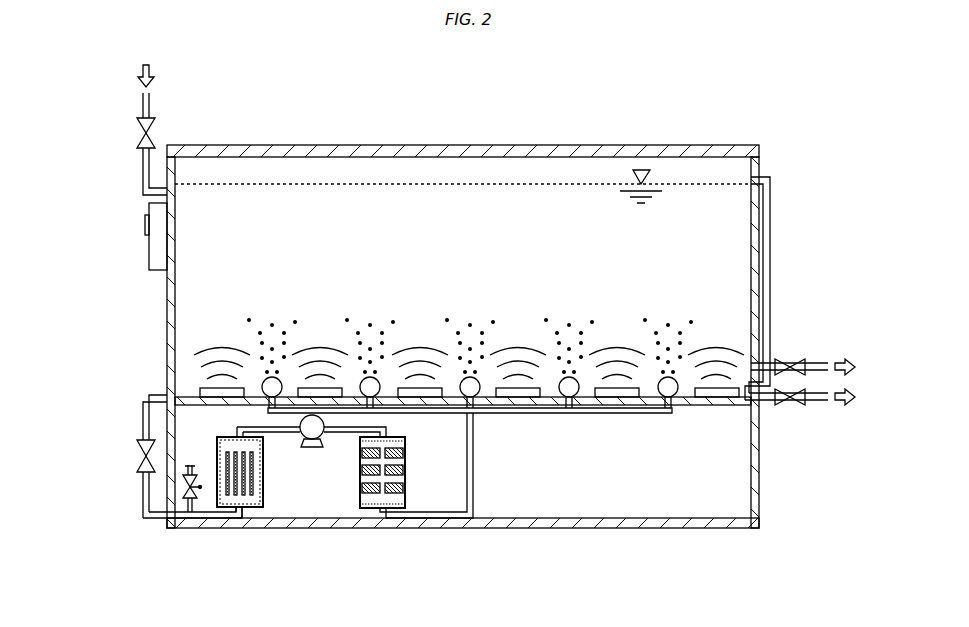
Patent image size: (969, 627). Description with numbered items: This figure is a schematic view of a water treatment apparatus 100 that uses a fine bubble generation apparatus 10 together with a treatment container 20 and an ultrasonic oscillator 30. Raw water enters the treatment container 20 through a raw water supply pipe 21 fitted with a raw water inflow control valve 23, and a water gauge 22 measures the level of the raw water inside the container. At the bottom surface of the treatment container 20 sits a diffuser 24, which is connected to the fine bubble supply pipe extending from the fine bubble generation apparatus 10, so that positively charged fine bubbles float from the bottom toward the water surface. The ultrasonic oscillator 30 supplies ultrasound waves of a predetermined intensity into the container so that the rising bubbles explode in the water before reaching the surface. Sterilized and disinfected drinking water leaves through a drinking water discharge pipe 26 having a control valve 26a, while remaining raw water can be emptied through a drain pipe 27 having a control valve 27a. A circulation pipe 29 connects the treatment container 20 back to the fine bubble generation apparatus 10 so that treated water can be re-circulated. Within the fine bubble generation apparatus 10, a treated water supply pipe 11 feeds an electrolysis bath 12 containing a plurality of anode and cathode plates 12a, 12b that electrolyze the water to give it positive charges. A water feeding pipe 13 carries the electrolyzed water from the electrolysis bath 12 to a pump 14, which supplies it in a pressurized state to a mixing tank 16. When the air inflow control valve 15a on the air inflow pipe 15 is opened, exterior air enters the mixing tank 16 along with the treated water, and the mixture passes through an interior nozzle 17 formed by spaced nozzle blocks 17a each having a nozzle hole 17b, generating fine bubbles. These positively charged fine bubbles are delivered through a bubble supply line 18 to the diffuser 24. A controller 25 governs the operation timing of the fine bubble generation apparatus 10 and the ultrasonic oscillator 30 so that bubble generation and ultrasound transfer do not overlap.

The water treatment apparatus 100 is at (708, 111).
The fine bubble generation apparatus 10 is at (438, 540).
The treatment container 20 is at (584, 154).
The raw water supply pipe 21 is at (143, 167).
The water gauge 22 is at (768, 248).
The raw water inflow control valve 23 is at (138, 132).
The diffuser 24 is at (668, 410).
The controller 25 is at (156, 253).
The drinking water discharge pipe 26 is at (815, 362).
The control valve 26a is at (785, 362).
The drain pipe 27 is at (822, 404).
The control valve 27a is at (782, 404).
The circulation pipe 29 is at (143, 411).
The ultrasonic oscillator 30 is at (715, 395).
The treated water supply pipe 11 is at (152, 527).
The electrolysis bath 12 is at (232, 498).
The anode plate 12a is at (212, 516).
The cathode plate 12b is at (237, 508).
The water feeding pipe 13 is at (283, 433).
The pump 14 is at (313, 441).
The air inflow pipe 15 is at (185, 470).
The air inflow control valve 15a is at (188, 490).
The mixing tank 16 is at (460, 468).
The interior nozzle 17 is at (461, 474).
The nozzle block 17a is at (405, 475).
The nozzle hole 17b is at (405, 472).
The bubble supply line 18 is at (377, 500).